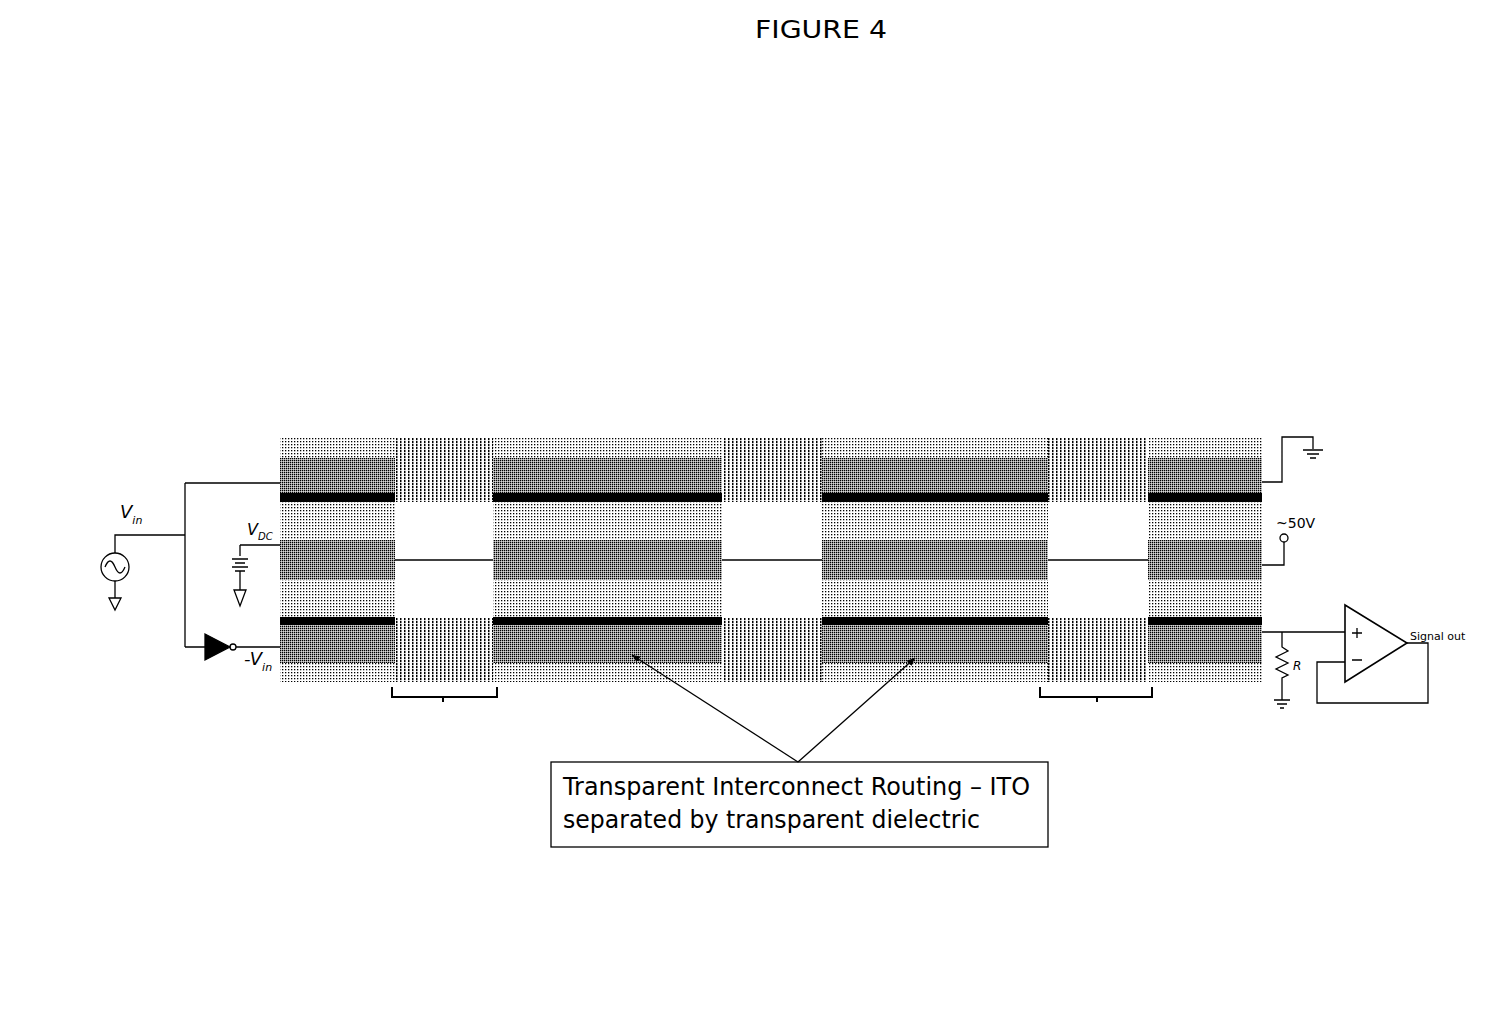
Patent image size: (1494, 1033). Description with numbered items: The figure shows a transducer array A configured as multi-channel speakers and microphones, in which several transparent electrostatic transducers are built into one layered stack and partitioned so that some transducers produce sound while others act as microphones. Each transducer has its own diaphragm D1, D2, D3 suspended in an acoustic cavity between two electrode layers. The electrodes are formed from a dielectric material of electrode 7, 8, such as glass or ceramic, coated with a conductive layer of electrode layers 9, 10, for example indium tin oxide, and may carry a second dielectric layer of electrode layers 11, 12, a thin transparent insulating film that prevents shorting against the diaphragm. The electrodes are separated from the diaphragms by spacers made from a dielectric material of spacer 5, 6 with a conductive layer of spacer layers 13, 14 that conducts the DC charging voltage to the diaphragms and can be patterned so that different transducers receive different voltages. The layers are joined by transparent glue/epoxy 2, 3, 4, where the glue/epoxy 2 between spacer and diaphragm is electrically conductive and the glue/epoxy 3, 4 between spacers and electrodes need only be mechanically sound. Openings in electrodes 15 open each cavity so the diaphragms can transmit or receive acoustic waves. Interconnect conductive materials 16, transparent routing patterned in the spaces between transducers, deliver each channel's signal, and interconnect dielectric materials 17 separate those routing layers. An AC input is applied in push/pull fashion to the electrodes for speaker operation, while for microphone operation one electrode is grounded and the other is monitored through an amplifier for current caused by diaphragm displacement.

The glue/epoxy 2 is at (1250, 562).
The glue/epoxy 3 is at (1250, 497).
The glue/epoxy 4 is at (1242, 620).
The dielectric material of spacer 5 is at (346, 522).
The dielectric material of spacer 6 is at (350, 603).
The dielectric material of electrode 7 is at (1235, 440).
The dielectric material of electrode 8 is at (1192, 675).
The conductive layer of electrode layers 9 is at (1247, 492).
The conductive layer of electrode layers 10 is at (1232, 630).
The second dielectric layer of electrode layers 11 is at (370, 492).
The second dielectric layer of electrode layers 12 is at (372, 630).
The conductive layer of spacer layers 13 is at (322, 545).
The conductive layer of spacer layers 14 is at (310, 582).
The openings in electrodes 15 is at (443, 713).
The interconnect conductive materials 16 is at (1212, 475).
The interconnect dielectric materials 17 is at (563, 630).
The transducer array A is at (1248, 188).
The diaphragm D1 is at (1068, 555).
The diaphragm D2 is at (750, 555).
The diaphragm D3 is at (425, 553).